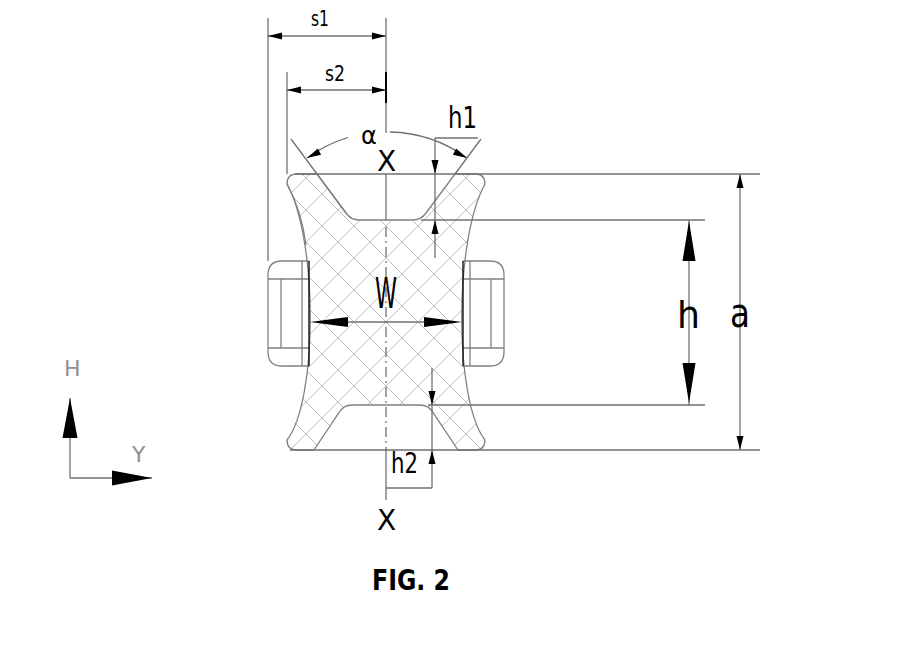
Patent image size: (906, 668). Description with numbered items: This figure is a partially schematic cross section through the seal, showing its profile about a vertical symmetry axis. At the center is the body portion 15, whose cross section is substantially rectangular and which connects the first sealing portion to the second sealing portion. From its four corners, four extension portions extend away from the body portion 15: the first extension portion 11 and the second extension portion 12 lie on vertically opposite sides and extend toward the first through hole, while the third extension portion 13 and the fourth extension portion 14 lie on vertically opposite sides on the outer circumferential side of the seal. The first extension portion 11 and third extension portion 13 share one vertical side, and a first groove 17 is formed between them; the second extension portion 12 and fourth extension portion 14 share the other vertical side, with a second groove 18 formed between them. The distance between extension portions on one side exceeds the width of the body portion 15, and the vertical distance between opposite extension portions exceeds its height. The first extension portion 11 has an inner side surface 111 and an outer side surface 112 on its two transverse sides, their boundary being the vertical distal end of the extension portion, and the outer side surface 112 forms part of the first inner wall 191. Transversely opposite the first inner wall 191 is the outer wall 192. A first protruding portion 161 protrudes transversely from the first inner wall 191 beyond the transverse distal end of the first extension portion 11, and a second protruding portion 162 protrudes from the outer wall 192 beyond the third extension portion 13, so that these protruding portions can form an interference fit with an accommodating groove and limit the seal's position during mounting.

The first extension portion 11 is at (302, 192).
The second extension portion 12 is at (303, 433).
The third extension portion 13 is at (463, 206).
The fourth extension portion 14 is at (459, 444).
The body portion 15 is at (417, 270).
The first groove 17 is at (396, 219).
The second groove 18 is at (366, 406).
The inner side surface 111 is at (328, 200).
The outer side surface 112 is at (293, 215).
The first protruding portion 161 is at (268, 317).
The second protruding portion 162 is at (505, 289).
The first inner wall 191 is at (308, 300).
The outer wall 192 is at (465, 373).